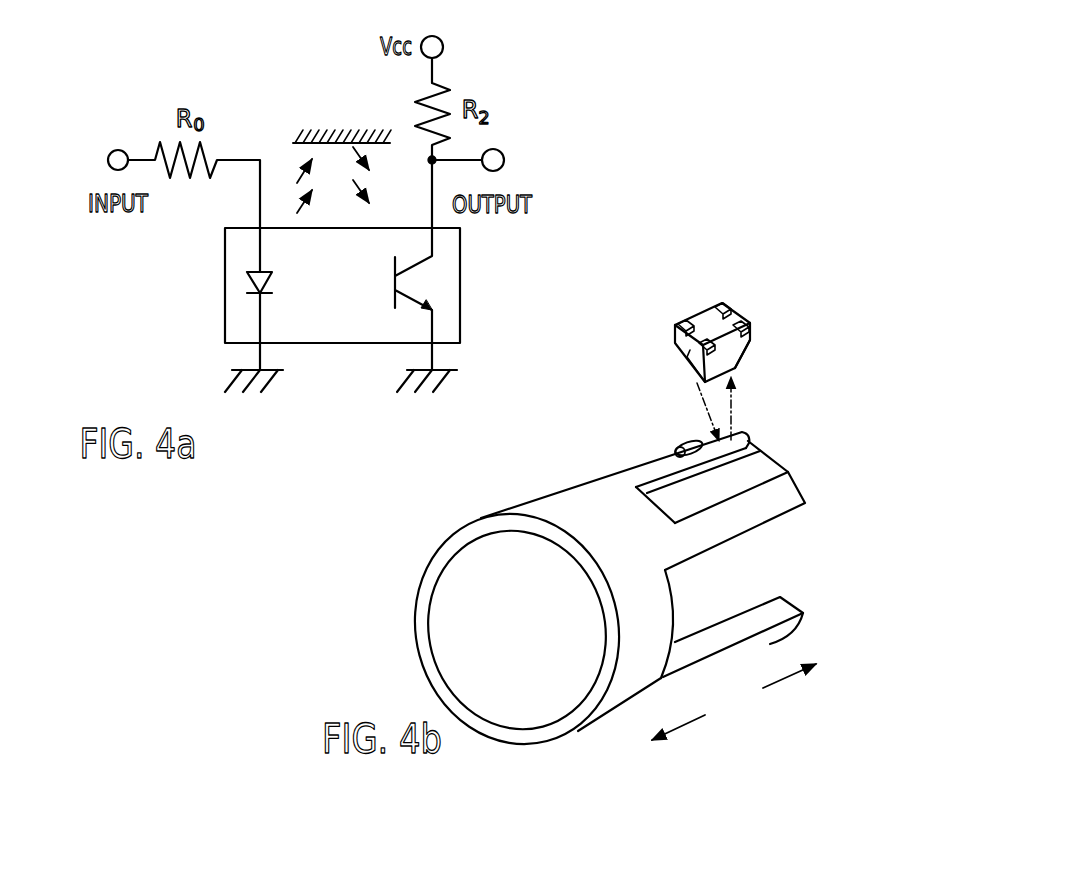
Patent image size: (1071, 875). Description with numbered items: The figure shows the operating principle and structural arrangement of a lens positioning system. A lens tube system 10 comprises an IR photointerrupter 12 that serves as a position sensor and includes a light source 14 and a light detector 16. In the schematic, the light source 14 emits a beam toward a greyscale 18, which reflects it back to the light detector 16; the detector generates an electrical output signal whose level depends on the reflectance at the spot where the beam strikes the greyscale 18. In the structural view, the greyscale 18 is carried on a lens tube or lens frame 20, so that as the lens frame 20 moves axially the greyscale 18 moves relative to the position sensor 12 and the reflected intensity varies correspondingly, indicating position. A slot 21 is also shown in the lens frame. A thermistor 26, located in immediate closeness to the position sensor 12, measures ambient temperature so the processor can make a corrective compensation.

In FIG. 4b, the lens tube system 10 is at (610, 441).
In FIG. 4b, the IR photointerrupter 12 is at (747, 313).
In FIG. 4a, the light source 14 is at (247, 289).
In FIG. 4a, the light detector 16 is at (407, 290).
In FIG. 4a, the greyscale 18 is at (333, 140).
In FIG. 4b, the greyscale 18 is at (688, 500).
In FIG. 4b, the lens frame 20 is at (580, 528).
In FIG. 4b, the slot 21 is at (800, 604).
In FIG. 4b, the thermistor 26 is at (668, 455).